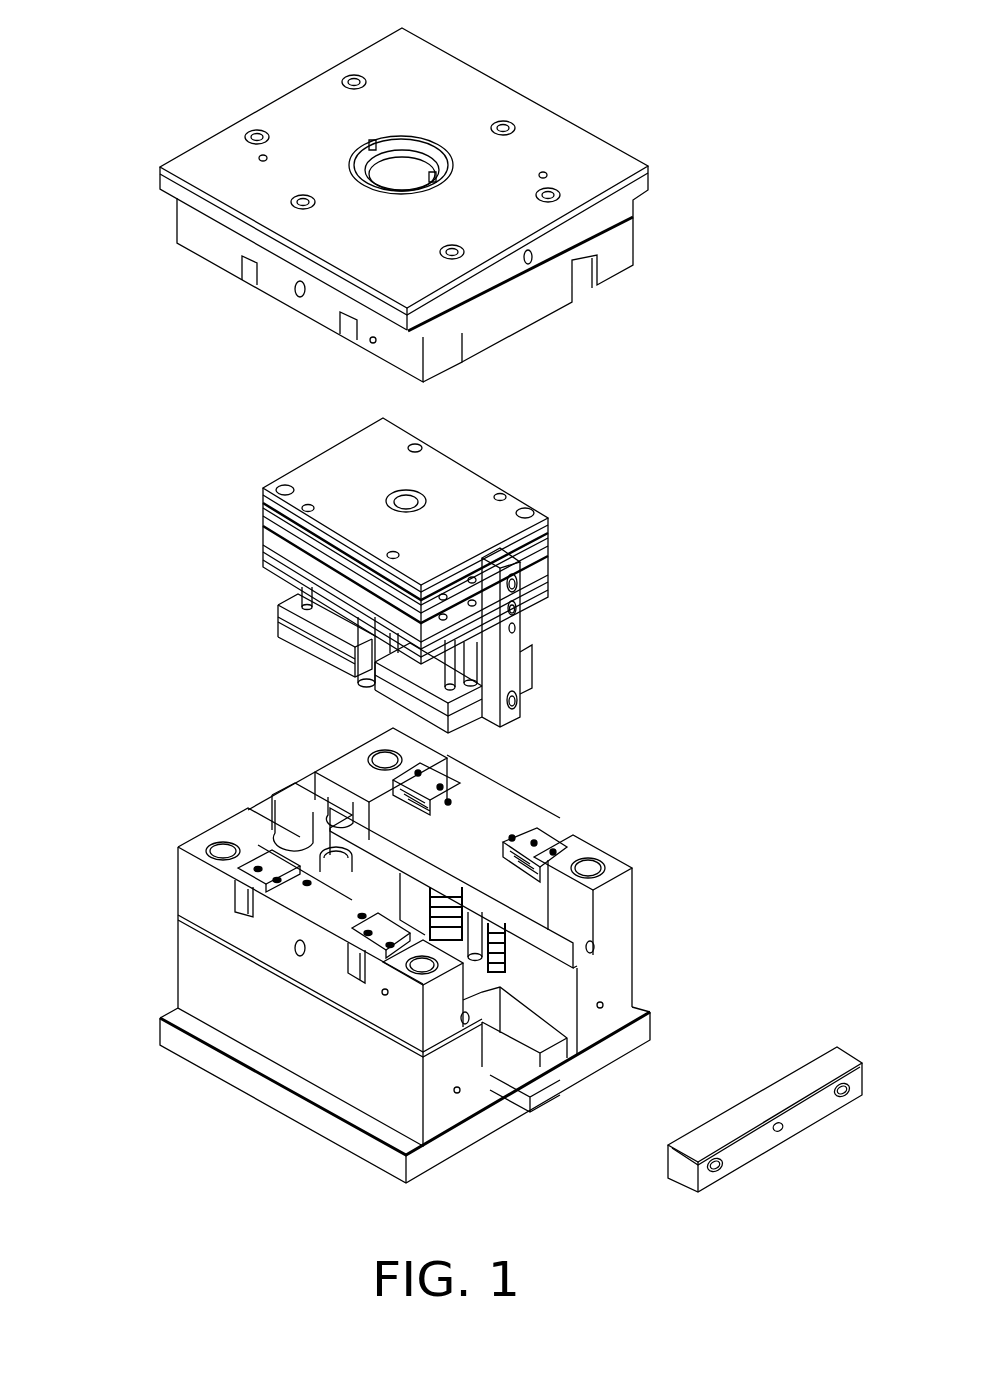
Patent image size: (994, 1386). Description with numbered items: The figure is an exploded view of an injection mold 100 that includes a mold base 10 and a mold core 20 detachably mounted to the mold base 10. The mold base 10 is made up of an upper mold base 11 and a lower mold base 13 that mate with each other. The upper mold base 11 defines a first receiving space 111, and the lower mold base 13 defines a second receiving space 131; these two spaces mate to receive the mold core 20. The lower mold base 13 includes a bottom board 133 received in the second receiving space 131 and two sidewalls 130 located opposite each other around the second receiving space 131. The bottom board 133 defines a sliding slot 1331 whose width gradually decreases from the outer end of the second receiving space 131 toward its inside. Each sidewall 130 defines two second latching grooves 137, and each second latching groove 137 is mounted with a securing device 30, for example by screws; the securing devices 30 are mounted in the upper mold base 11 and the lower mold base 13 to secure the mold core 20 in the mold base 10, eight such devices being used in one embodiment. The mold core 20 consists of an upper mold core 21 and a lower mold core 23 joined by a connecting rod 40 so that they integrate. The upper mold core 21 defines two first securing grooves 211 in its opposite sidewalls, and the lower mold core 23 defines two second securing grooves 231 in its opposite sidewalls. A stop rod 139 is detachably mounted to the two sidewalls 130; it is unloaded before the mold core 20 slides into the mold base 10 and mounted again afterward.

The injection mold 100 is at (268, 23).
The mold base 10 is at (90, 327).
The upper mold base 11 is at (235, 307).
The first receiving space 111 is at (516, 313).
The mold core 20 is at (530, 484).
The upper mold core 21 is at (537, 543).
The first securing groove 211 is at (270, 512).
The lower mold core 23 is at (537, 576).
The second securing groove 231 is at (283, 547).
The connecting rod 40 is at (512, 642).
The lower mold base 13 is at (247, 798).
The sidewall 130 is at (217, 909).
The second receiving space 131 is at (365, 890).
The bottom board 133 is at (528, 1035).
The sliding slot 1331 is at (543, 1070).
The second latching groove 137 is at (570, 853).
The stop rod 139 is at (757, 1108).
The securing device 30 is at (253, 843).